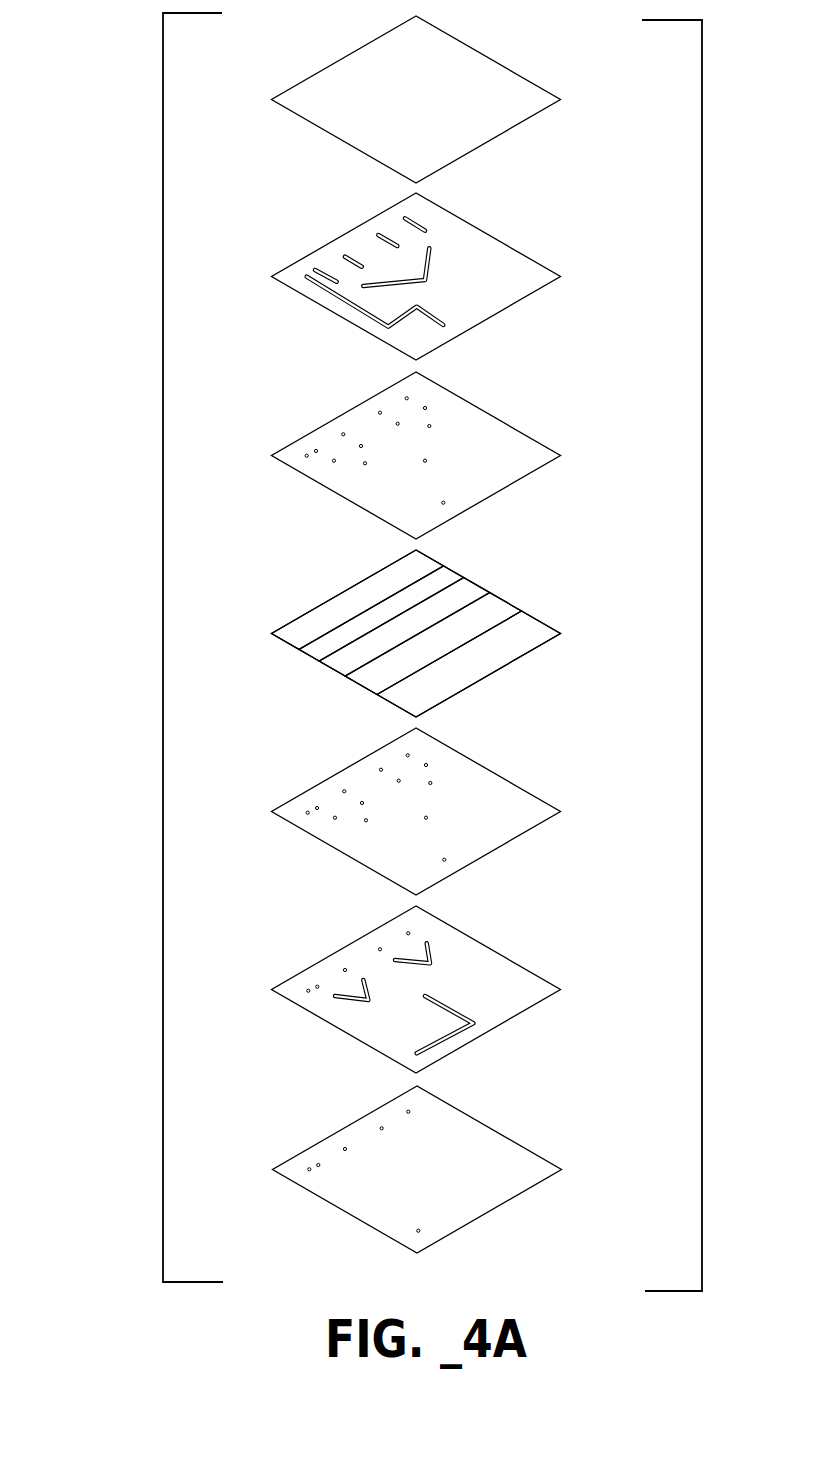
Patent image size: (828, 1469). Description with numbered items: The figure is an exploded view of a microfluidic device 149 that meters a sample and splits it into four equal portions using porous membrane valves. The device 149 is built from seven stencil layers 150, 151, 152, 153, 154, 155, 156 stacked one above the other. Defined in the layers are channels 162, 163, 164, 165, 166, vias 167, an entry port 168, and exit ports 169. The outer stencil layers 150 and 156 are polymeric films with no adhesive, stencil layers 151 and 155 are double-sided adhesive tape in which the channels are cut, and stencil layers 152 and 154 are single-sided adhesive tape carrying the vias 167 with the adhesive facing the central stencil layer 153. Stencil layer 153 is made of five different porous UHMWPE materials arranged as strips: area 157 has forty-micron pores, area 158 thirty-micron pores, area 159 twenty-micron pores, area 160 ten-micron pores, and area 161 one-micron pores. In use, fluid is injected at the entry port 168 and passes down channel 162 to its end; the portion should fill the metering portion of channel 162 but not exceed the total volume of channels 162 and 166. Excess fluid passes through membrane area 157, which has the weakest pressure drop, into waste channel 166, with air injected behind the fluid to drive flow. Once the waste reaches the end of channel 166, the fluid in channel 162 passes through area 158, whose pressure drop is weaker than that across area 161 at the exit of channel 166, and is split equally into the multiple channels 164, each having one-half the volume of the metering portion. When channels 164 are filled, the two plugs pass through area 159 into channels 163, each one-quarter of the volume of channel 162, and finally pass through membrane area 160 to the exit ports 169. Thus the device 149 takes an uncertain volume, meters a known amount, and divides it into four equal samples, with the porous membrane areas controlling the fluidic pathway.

The microfluidic device 149 is at (162, 685).
The stencil layer 150 is at (533, 1162).
The stencil layer 151 is at (547, 990).
The stencil layer 152 is at (540, 810).
The stencil layer 153 is at (535, 633).
The stencil layer 154 is at (537, 448).
The stencil layer 155 is at (535, 277).
The stencil layer 156 is at (540, 97).
The porous membrane area 157 is at (403, 694).
The porous membrane area 158 is at (493, 598).
The porous membrane area 159 is at (345, 653).
The porous membrane area 160 is at (378, 612).
The porous membrane area 161 is at (403, 569).
The channel 162 is at (447, 1005).
The channel 163 is at (433, 947).
The channel 164 is at (430, 265).
The channel 165 is at (343, 255).
The waste channel 166 is at (342, 298).
The vias 167 is at (343, 433).
The entry port 168 is at (418, 1233).
The exit ports 169 is at (345, 1147).